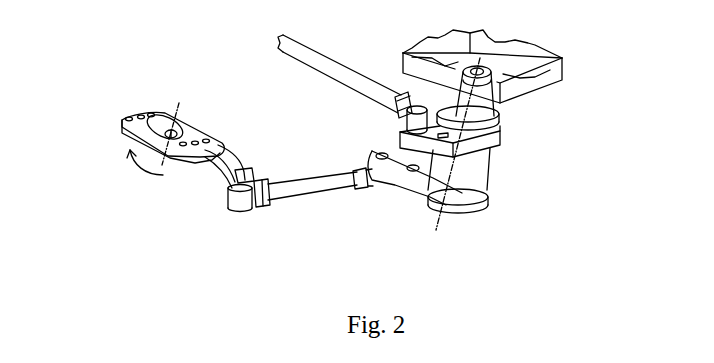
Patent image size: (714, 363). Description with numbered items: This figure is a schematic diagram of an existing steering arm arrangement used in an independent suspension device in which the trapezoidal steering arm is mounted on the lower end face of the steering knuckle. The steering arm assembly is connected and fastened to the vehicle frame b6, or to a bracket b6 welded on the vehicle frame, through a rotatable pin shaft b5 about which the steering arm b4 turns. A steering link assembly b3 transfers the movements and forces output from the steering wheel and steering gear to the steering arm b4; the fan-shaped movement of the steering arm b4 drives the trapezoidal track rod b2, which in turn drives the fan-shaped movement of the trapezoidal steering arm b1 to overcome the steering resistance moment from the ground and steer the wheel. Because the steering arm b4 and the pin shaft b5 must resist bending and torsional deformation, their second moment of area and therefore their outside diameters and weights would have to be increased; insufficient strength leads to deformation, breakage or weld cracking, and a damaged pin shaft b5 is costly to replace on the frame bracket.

The trapezoidal steering arm b1 is at (215, 178).
The trapezoidal track rod b2 is at (305, 188).
The steering link assembly b3 is at (377, 92).
The steering arm b4 is at (445, 143).
The pin shaft b5 is at (489, 165).
The vehicle frame or bracket b6 is at (528, 82).